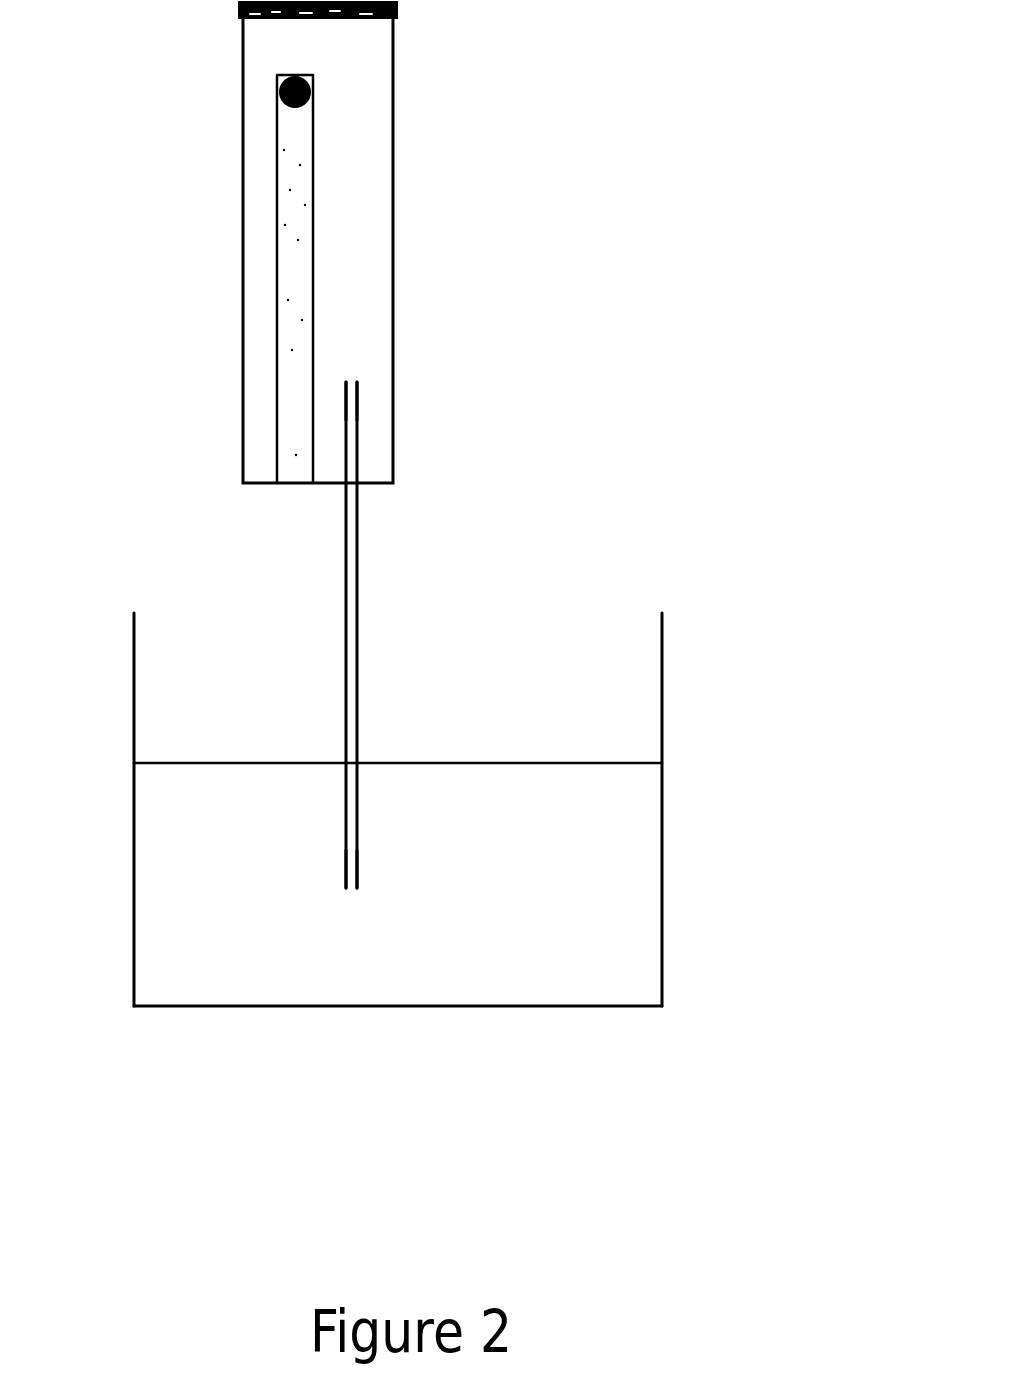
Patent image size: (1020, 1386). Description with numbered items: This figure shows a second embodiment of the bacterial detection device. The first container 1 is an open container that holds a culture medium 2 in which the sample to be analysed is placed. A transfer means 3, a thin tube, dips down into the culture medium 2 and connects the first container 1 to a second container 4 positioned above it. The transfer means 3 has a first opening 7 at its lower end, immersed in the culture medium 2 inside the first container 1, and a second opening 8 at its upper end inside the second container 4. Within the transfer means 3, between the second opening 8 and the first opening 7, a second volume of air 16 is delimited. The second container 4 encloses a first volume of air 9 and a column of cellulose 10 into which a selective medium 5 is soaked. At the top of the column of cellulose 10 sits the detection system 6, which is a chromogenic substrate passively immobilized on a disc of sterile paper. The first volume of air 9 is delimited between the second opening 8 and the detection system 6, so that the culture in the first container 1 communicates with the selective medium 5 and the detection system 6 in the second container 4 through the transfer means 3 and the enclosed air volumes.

The first container 1 is at (672, 915).
The culture medium 2 is at (609, 982).
The transfer means 3 is at (368, 585).
The second container 4 is at (240, 207).
The selective medium 5 is at (308, 218).
The detection system 6 is at (324, 93).
The first opening 7 is at (362, 885).
The second opening 8 is at (364, 385).
The first volume of air 9 is at (366, 293).
The column of cellulose 10 is at (271, 365).
The second volume of air 16 is at (355, 647).